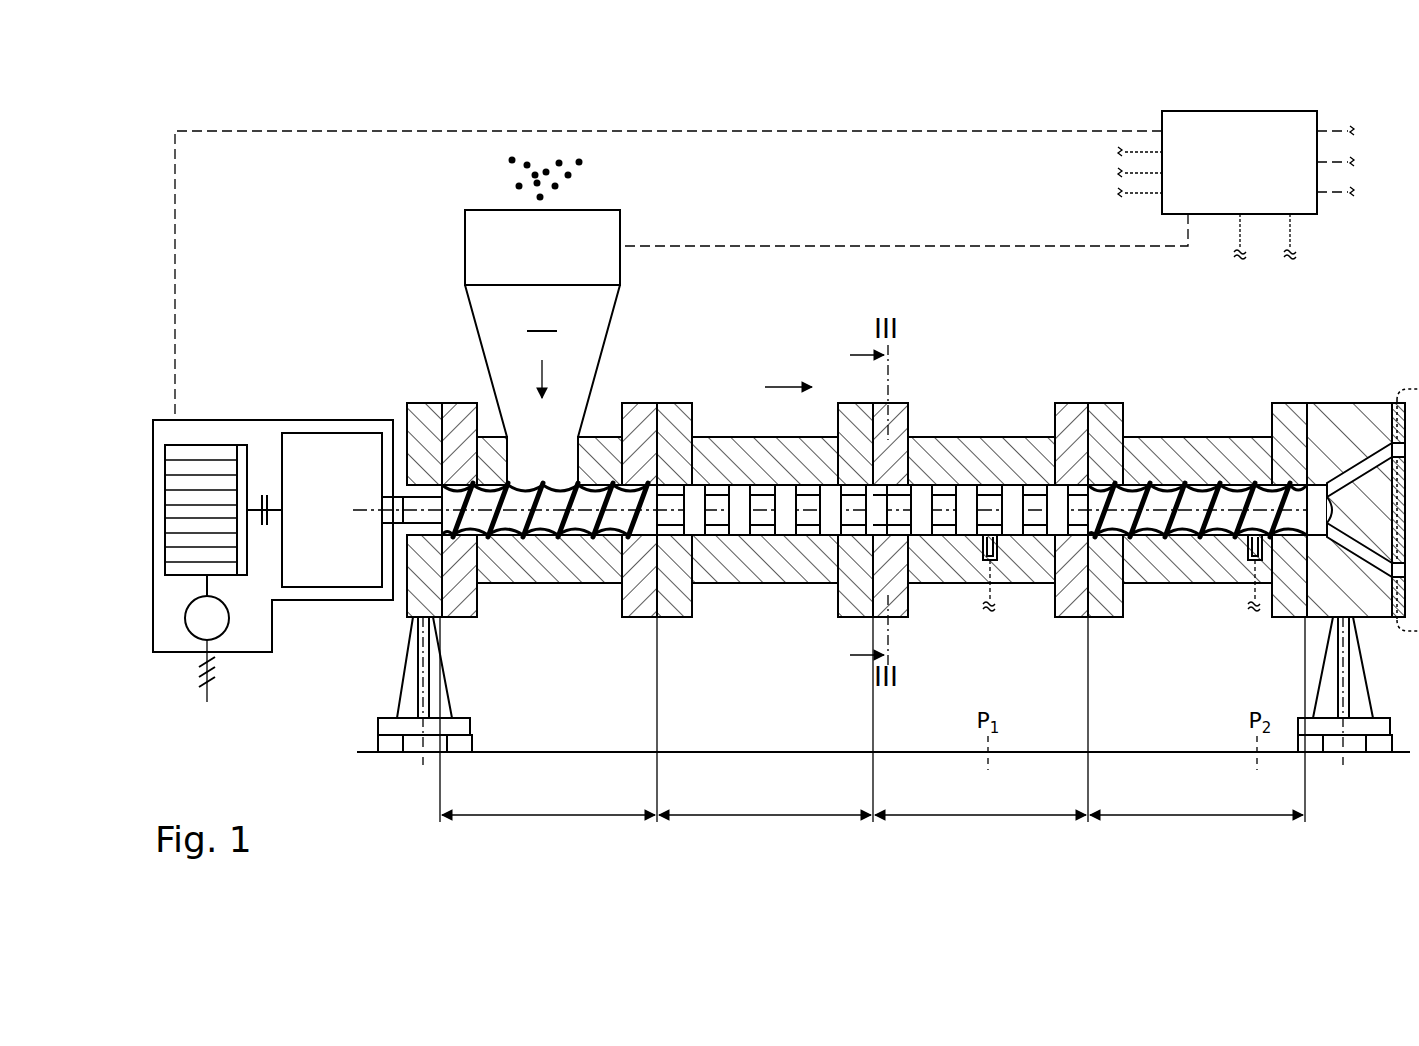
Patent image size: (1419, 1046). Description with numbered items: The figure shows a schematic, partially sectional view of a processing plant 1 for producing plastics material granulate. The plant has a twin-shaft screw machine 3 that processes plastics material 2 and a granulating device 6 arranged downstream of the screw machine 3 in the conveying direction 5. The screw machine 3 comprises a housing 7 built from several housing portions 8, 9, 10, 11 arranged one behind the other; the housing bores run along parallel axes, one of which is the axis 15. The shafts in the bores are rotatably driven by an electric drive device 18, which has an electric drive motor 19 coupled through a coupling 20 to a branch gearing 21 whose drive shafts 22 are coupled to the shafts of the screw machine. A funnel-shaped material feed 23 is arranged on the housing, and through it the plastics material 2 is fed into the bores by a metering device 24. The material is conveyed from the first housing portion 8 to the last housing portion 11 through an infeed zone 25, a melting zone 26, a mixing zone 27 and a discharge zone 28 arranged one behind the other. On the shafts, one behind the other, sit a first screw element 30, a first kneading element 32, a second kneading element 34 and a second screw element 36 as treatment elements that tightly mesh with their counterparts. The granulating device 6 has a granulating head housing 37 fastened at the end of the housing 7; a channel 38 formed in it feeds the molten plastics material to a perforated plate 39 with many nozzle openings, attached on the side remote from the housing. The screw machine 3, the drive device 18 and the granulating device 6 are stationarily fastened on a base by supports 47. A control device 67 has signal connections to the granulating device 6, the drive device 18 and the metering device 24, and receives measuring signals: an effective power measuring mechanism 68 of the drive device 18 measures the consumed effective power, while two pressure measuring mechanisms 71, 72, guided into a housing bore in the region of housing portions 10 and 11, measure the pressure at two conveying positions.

The processing plant 1 is at (983, 330).
The plastics material 2 is at (507, 172).
The twin-shaft screw machine 3 is at (958, 385).
The conveying direction 5 is at (788, 387).
The granulating device 6 is at (1366, 388).
The housing 7 is at (658, 402).
The housing portion 8 is at (608, 436).
The housing portion 9 is at (738, 437).
The housing portion 10 is at (1015, 437).
The housing portion 11 is at (1185, 437).
The axis 15 is at (513, 540).
The drive device 18 is at (250, 656).
The drive motor 19 is at (207, 452).
The coupling 20 is at (262, 505).
The branch gearing 21 is at (310, 458).
The drive shaft 22 is at (398, 496).
The material feed 23 is at (487, 345).
The metering device 24 is at (470, 246).
The infeed zone 25 is at (548, 719).
The melting zone 26 is at (766, 719).
The mixing zone 27 is at (981, 719).
The discharge zone 28 is at (1197, 719).
The first screw element 30 is at (630, 540).
The first kneading element 32 is at (738, 538).
The second kneading element 34 is at (950, 538).
The second screw element 36 is at (1243, 540).
The granulating head housing 37 is at (1318, 407).
The channel 38 is at (1360, 470).
The perforated plate 39 is at (1400, 405).
The support 47 is at (410, 678).
The control device 67 is at (1237, 118).
The effective power measuring mechanism 68 is at (200, 630).
The pressure measuring mechanism 71 is at (993, 550).
The pressure measuring mechanism 72 is at (1263, 550).